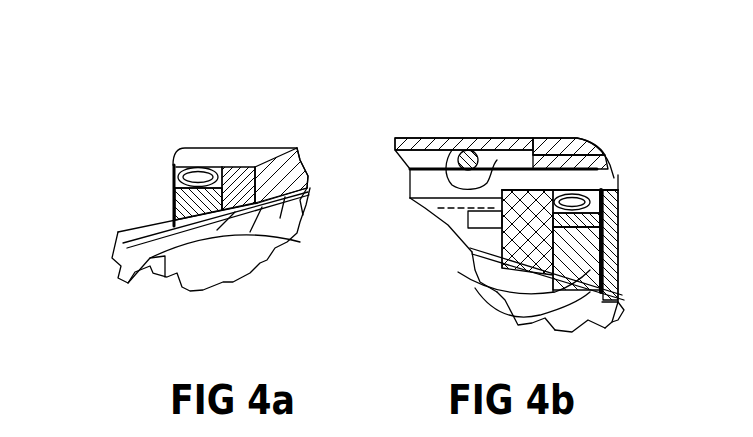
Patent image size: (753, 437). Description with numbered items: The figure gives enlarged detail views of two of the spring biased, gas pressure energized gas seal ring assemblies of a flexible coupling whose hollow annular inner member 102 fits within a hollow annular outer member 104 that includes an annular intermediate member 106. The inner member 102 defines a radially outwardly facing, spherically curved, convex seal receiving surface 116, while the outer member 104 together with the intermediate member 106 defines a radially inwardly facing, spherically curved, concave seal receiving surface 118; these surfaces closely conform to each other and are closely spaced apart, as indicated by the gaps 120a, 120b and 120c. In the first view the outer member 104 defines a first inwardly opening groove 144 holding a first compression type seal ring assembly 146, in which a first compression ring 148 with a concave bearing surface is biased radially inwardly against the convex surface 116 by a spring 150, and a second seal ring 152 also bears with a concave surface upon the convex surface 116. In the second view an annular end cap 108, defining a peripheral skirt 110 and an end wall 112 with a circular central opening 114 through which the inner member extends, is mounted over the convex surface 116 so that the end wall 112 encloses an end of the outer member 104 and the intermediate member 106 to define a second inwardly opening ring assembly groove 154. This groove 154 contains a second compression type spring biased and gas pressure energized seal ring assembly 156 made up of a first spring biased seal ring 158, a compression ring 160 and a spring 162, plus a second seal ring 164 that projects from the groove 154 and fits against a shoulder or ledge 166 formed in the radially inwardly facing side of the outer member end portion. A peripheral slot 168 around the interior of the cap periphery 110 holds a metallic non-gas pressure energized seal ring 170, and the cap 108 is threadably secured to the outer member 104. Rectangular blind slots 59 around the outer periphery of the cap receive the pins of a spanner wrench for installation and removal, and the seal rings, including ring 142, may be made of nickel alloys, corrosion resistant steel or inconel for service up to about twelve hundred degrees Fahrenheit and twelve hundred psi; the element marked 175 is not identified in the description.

In FIG. 4b, the blind notches or slots 59 is at (550, 147).
In FIG. 4b, the inner member 102 is at (507, 300).
In FIG. 4b, the outer member 104 is at (482, 150).
In FIG. 4b, the intermediate member 106 is at (466, 216).
In FIG. 4b, the end cap 108 is at (525, 137).
In FIG. 4b, the peripheral skirt 110 is at (517, 161).
In FIG. 4b, the end wall 112 is at (614, 221).
In FIG. 4b, the circular central opening 114 is at (622, 289).
In FIG. 4b, the convex seal receiving surface 116 is at (495, 297).
In FIG. 4b, the concave seal receiving surface 118 is at (472, 268).
In FIG. 4a, the gap 120a is at (127, 243).
In FIG. 4a, the gap 120b is at (292, 208).
In FIG. 4b, the gap 120c is at (469, 250).
In FIG. 4a, the seal ring 142 is at (300, 432).
In FIG. 4a, the first inwardly opening groove 144 is at (243, 172).
In FIG. 4a, the first compression type seal ring assembly 146 is at (175, 163).
In FIG. 4a, the first compression ring 148 is at (180, 216).
In FIG. 4a, the spring 150 is at (190, 167).
In FIG. 4a, the second seal ring 152 is at (240, 205).
In FIG. 4b, the second inwardly opening ring assembly groove 154 is at (567, 320).
In FIG. 4b, the second compression type spring biased and gas pressure energized seal ring assem 156 is at (610, 212).
In FIG. 4b, the first spring biased seal ring 158 is at (555, 305).
In FIG. 4b, the compression ring 160 is at (622, 244).
In FIG. 4b, the spring 162 is at (527, 300).
In FIG. 4b, the second seal ring 164 is at (460, 153).
In FIG. 4b, the shoulder or ledge 166 is at (493, 285).
In FIG. 4b, the peripheral slot 168 is at (406, 191).
In FIG. 4b, the metallic non-gas pressure energized seal ring 170 is at (422, 153).
In FIG. 4b, the slot 175 is at (474, 262).